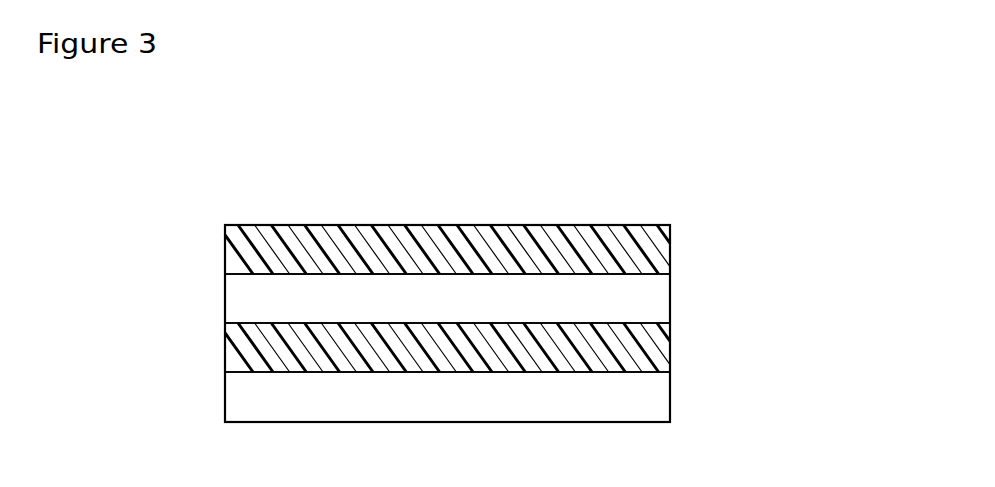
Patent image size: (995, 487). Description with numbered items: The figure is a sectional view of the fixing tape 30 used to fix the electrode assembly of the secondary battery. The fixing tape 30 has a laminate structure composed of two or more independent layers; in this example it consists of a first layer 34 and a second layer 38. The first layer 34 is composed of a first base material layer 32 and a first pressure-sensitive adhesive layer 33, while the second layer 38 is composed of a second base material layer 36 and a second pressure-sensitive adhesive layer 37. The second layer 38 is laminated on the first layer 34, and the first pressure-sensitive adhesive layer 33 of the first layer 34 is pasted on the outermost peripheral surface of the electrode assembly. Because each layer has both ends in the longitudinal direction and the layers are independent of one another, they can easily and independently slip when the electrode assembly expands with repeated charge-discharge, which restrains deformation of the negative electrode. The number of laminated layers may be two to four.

The fixing tape 30 is at (613, 212).
The first base material layer 32 is at (658, 346).
The first pressure-sensitive adhesive layer 33 is at (479, 397).
The first layer 34 is at (505, 372).
The second base material layer 36 is at (658, 248).
The second pressure-sensitive adhesive layer 37 is at (479, 298).
The second layer 38 is at (506, 274).